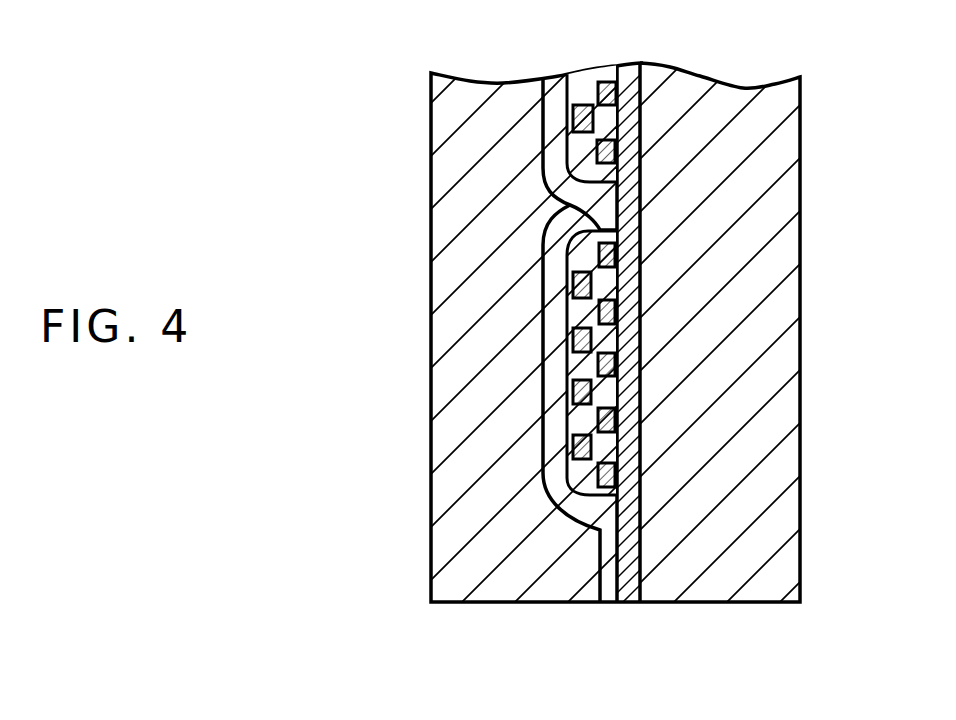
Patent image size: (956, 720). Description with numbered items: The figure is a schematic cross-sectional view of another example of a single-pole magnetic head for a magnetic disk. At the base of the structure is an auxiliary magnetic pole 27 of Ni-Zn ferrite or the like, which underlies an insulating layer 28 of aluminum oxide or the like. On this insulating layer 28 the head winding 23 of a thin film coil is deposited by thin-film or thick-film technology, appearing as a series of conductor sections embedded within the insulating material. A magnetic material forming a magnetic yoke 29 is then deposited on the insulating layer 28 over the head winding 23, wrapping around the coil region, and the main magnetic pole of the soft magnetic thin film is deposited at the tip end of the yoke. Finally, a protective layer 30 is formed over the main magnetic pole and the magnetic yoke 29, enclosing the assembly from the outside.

The head winding 23 is at (607, 78).
The auxiliary magnetic pole 27 is at (784, 449).
The insulating layer 28 is at (614, 232).
The magnetic yoke 29 is at (550, 318).
The protective layer 30 is at (446, 498).